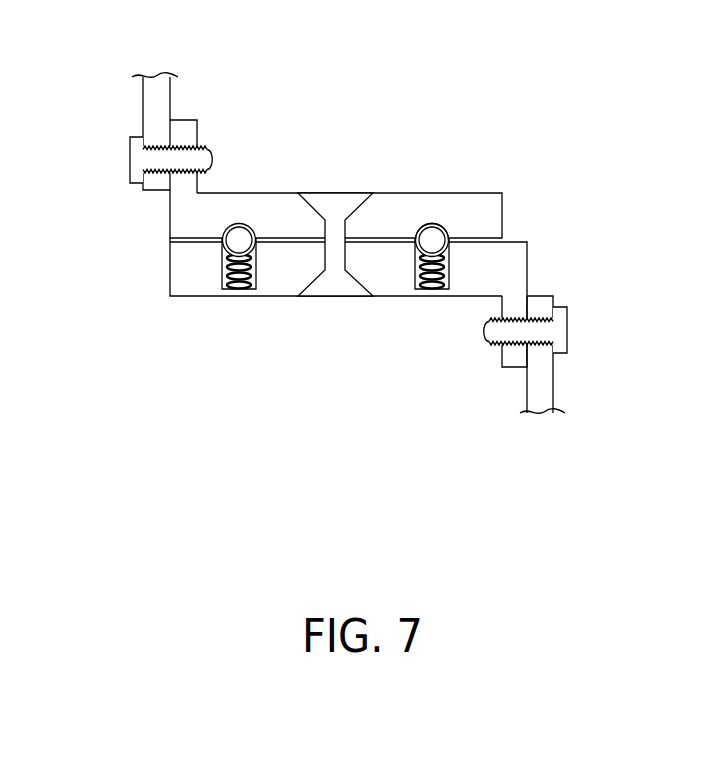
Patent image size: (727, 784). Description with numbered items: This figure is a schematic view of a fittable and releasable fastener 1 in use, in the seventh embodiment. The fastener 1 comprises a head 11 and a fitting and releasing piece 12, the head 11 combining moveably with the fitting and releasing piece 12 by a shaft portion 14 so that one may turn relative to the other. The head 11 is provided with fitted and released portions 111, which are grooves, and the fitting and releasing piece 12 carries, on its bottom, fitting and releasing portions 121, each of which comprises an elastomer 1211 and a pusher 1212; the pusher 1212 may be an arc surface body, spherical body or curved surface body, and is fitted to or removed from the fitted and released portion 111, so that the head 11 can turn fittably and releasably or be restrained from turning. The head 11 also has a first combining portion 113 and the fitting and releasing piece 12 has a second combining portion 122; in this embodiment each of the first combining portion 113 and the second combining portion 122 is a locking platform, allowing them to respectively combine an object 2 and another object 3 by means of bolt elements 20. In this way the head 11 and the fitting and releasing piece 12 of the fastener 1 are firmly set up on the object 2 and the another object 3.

The fittable and releasable fastener 1 is at (271, 127).
The object 2 is at (157, 104).
The another object 3 is at (537, 383).
The head 11 is at (192, 222).
The fitting and releasing piece 12 is at (192, 281).
The shaft portion 14 is at (332, 212).
The bolt element 20 is at (142, 156).
The fitted and released portion 111 is at (425, 223).
The first combining portion 113 is at (183, 137).
The fitting and releasing portion 121 is at (348, 327).
The elastomer 1211 is at (415, 275).
The pusher 1212 is at (440, 243).
The second combining portion 122 is at (513, 362).